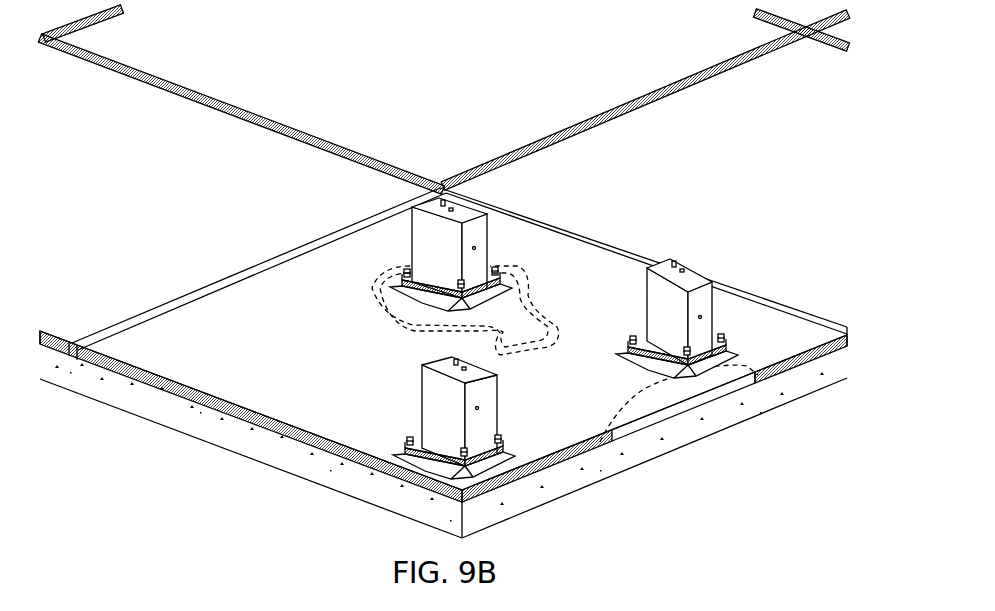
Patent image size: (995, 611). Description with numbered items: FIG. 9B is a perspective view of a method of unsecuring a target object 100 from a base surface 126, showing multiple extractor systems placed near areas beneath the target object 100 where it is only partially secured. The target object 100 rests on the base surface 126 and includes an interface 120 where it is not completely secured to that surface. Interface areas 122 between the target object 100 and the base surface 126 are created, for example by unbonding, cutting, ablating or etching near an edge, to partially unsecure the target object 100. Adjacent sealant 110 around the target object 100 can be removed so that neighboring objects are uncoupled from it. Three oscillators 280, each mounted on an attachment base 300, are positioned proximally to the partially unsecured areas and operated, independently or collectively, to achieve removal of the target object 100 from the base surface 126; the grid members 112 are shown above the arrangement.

The target object 100 is at (443, 363).
The adjacent sealant 110 is at (605, 244).
The grid beam 112 is at (617, 110).
The interface 120 is at (546, 339).
The interface areas 122 is at (507, 496).
The base surface 126 is at (600, 462).
The oscillators 280 is at (460, 259).
The attachment bases 300 is at (525, 280).